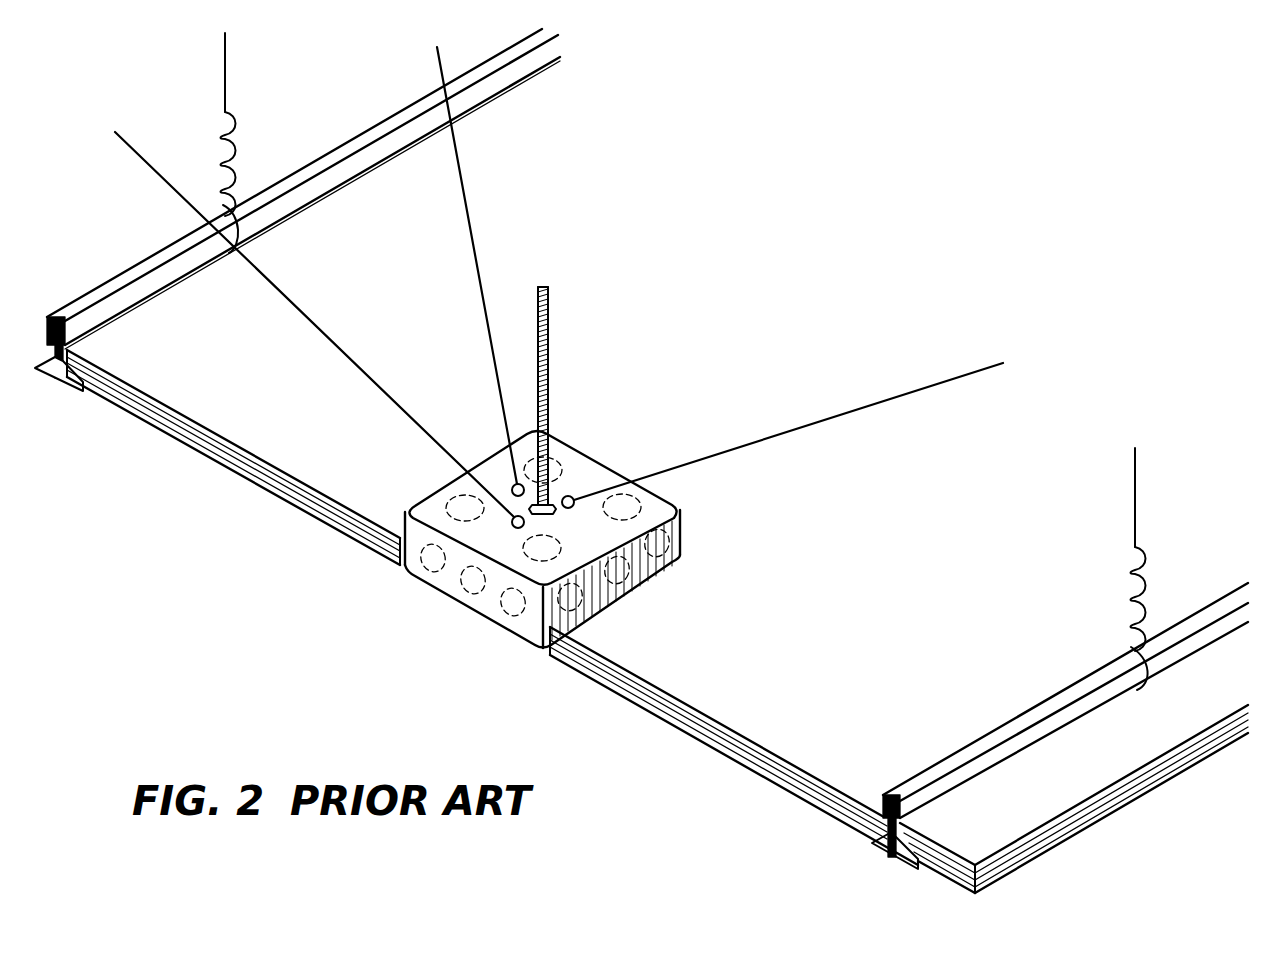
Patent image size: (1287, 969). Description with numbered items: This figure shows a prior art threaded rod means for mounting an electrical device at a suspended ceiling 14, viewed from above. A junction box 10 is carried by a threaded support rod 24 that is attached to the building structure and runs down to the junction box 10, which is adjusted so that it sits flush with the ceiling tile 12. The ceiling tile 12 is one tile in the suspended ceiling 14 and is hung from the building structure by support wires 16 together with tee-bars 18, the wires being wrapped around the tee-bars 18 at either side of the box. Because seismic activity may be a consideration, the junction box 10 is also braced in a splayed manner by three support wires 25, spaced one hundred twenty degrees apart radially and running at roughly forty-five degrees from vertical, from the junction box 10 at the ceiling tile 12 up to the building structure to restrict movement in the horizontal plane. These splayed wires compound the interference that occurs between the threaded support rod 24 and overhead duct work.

The junction box 10 is at (542, 520).
The ceiling tile 12 is at (492, 607).
The suspended ceiling 14 is at (1085, 760).
The support wires 16 is at (237, 83).
The tee-bars 18 is at (883, 861).
The threaded support rod 24 is at (552, 327).
The support wires 25 is at (512, 200).